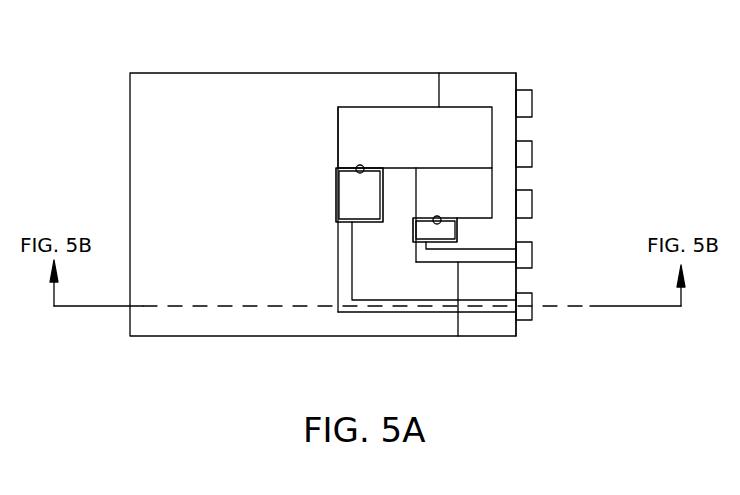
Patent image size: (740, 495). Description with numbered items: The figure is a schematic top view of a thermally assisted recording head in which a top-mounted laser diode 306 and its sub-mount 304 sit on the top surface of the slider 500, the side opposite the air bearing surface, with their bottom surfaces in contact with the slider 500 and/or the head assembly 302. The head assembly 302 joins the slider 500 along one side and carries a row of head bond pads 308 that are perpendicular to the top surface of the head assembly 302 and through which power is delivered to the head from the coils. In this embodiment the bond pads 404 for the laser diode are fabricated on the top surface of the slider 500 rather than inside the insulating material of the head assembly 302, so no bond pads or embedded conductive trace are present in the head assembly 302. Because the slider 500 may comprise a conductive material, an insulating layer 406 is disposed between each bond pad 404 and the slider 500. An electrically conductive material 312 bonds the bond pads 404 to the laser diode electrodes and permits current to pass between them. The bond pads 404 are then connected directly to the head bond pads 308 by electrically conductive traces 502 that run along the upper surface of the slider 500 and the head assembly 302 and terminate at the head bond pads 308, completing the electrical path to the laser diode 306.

The slider 500 is at (205, 93).
The head assembly 302 is at (508, 83).
The sub-mount 304 is at (477, 120).
The laser diode 306 is at (479, 182).
The head bond pads 308 is at (532, 102).
The electrically conductive material 312 is at (360, 166).
The bond pads 404 is at (357, 198).
The insulating layer 406 is at (335, 212).
The electrically conductive traces 502 is at (350, 248).